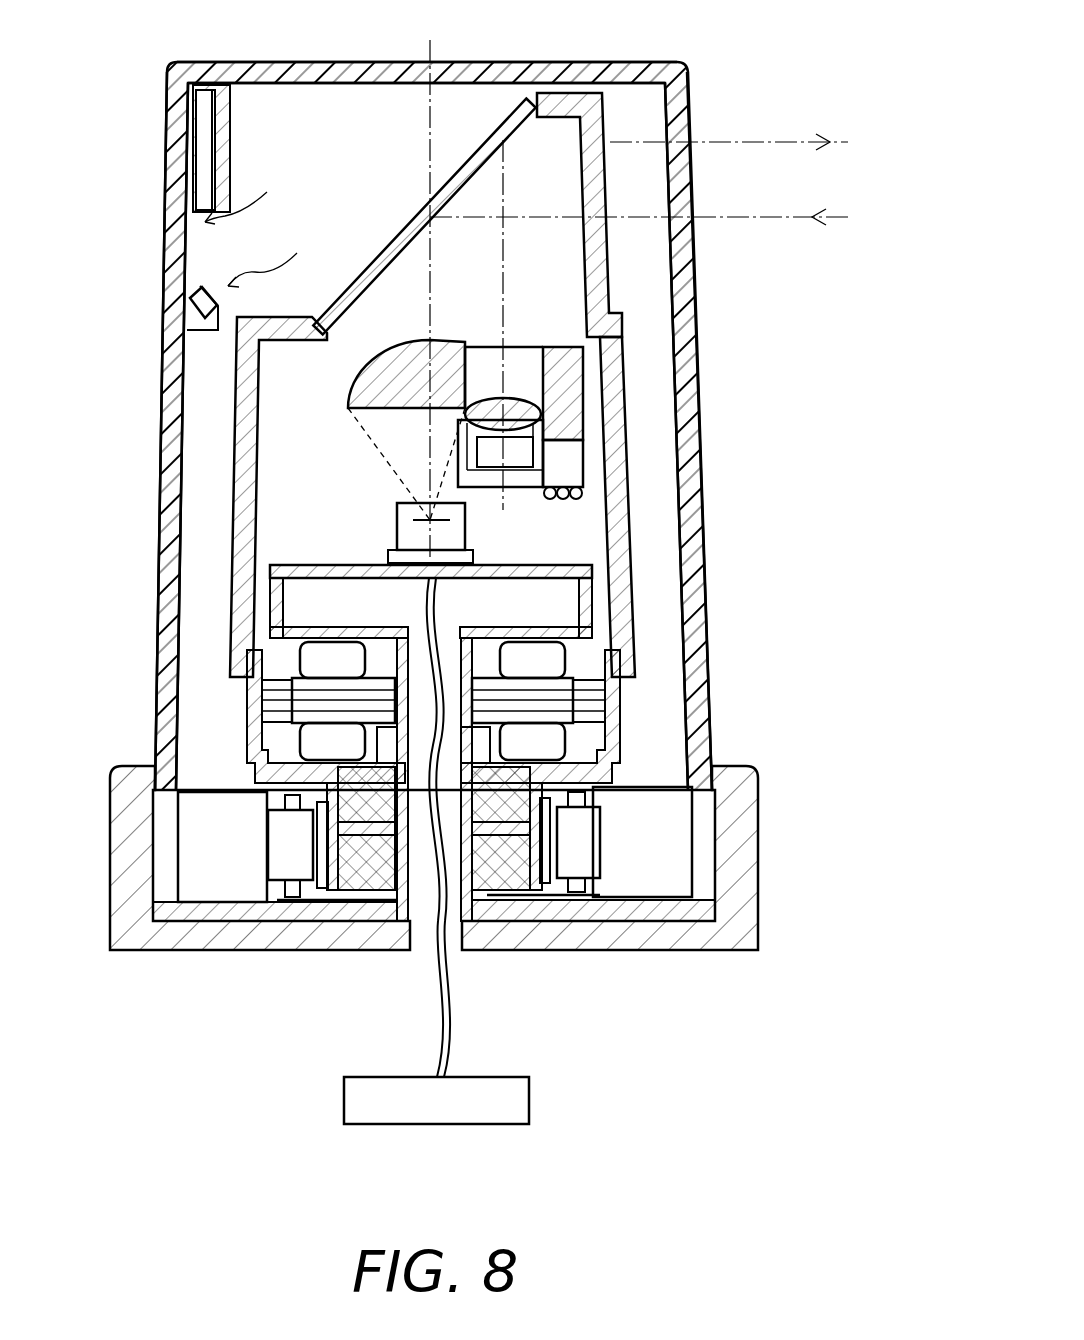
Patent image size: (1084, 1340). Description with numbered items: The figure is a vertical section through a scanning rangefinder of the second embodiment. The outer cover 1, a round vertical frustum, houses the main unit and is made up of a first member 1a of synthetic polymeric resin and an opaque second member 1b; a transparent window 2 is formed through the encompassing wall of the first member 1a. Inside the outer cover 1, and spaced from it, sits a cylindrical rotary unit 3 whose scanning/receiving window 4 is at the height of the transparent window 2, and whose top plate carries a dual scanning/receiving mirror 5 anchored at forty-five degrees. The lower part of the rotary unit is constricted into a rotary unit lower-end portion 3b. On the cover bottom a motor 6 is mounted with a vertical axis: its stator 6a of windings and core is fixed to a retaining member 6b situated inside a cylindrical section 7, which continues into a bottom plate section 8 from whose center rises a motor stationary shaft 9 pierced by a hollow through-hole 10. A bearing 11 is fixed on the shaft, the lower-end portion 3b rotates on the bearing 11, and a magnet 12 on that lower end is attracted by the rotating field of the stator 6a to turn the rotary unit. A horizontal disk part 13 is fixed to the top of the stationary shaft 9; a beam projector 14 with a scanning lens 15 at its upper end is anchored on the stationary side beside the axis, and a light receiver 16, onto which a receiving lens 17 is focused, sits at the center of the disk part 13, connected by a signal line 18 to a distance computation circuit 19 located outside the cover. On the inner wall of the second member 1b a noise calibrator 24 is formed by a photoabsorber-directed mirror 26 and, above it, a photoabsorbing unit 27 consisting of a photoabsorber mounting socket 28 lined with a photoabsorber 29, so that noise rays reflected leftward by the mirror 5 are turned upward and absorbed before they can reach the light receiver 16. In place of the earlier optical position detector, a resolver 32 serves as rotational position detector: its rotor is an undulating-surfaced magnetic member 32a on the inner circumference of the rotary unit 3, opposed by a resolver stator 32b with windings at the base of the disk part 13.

The outer cover 1 is at (703, 503).
The first member 1a is at (700, 413).
The second member 1b is at (160, 478).
The transparent window 2 is at (694, 270).
The cylindrical rotary unit 3 is at (633, 572).
The rotary unit lower-end portion 3b is at (522, 900).
The scanning/receiving window 4 is at (662, 188).
The dual scanning/receiving mirror 5 is at (483, 127).
The motor 6 is at (729, 833).
The stator 6a is at (612, 877).
The retaining member 6b is at (655, 915).
The cylindrical section 7 is at (730, 857).
The bottom plate section 8 is at (280, 917).
The motor stationary shaft 9 is at (452, 952).
The hollow through-hole 10 is at (412, 905).
The bearing 11 is at (367, 895).
The magnet 12 is at (312, 900).
The disk part 13 is at (301, 563).
The beam projector 14 is at (517, 457).
The scanning lens 15 is at (515, 395).
The light receiver 16 is at (397, 527).
The receiving lens 17 is at (350, 386).
The signal line 18 is at (447, 600).
The distance computation circuit 19 is at (530, 1100).
The noise calibrator 24 is at (277, 263).
The photoabsorber-directed mirror 26 is at (205, 292).
The photoabsorbing unit 27 is at (252, 201).
The photoabsorber mounting socket 28 is at (205, 153).
The photoabsorber 29 is at (205, 132).
The resolver 32 is at (590, 653).
The undulating-surfaced magnetic member 32a is at (597, 705).
The resolver stator 32b is at (600, 762).